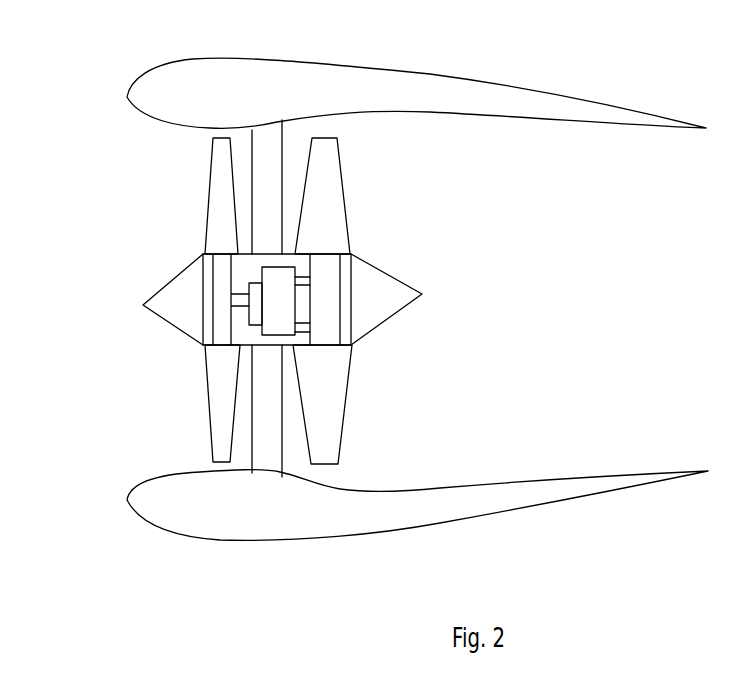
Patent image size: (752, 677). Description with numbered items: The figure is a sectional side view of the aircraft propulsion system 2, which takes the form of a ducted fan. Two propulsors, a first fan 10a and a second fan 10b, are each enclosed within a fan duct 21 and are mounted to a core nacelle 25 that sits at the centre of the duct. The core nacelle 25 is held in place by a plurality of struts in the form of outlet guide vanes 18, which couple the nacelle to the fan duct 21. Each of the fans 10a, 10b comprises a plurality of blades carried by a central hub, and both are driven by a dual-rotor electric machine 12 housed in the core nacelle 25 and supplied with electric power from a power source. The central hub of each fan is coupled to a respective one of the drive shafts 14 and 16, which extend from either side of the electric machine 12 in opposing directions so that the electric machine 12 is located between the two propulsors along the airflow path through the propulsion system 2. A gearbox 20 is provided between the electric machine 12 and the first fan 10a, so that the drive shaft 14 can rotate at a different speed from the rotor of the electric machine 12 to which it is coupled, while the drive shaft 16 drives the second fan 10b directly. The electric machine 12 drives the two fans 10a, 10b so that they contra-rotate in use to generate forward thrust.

The propulsion system 2 is at (95, 203).
The fan duct 21 is at (235, 75).
The outlet guide vanes 18 is at (283, 150).
The second fan 10b is at (340, 162).
The first fan 10a is at (213, 400).
The core nacelle 25 is at (395, 275).
The drive shaft 14 is at (240, 287).
The gearbox 20 is at (243, 313).
The dual-rotor electric machine 12 is at (278, 301).
The drive shaft 16 is at (302, 335).